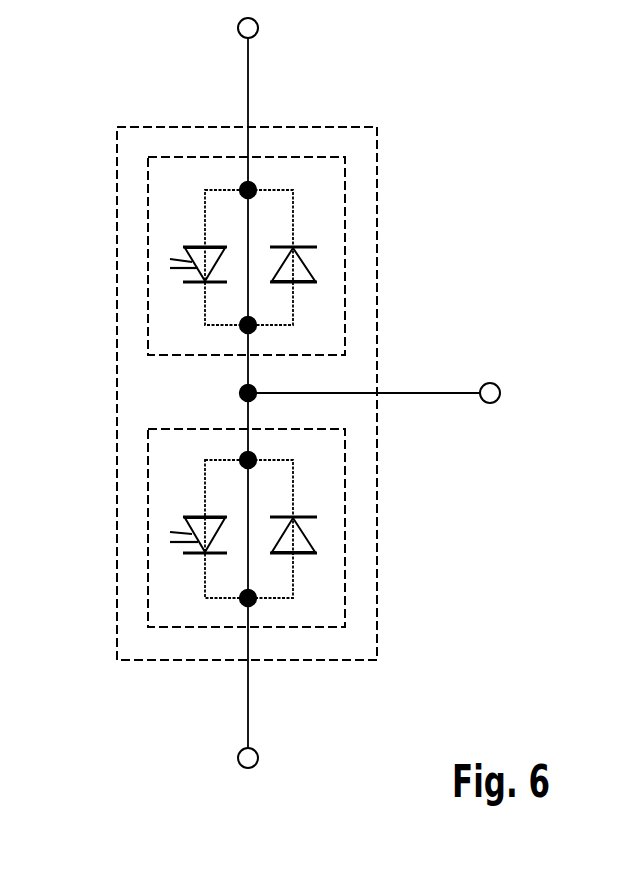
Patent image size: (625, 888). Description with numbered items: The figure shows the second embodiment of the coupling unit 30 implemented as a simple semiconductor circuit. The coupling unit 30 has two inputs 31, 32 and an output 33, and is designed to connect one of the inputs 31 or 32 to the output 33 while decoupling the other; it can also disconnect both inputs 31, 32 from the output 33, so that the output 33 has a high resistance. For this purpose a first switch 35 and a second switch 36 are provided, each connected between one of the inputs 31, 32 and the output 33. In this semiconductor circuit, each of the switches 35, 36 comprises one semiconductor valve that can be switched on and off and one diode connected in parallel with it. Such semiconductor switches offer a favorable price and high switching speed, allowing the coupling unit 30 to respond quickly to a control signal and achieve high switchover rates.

The coupling unit 30 is at (378, 163).
The first input 31 is at (258, 28).
The second input 32 is at (258, 758).
The output 33 is at (488, 382).
The first switch 35 is at (148, 205).
The second switch 36 is at (148, 478).